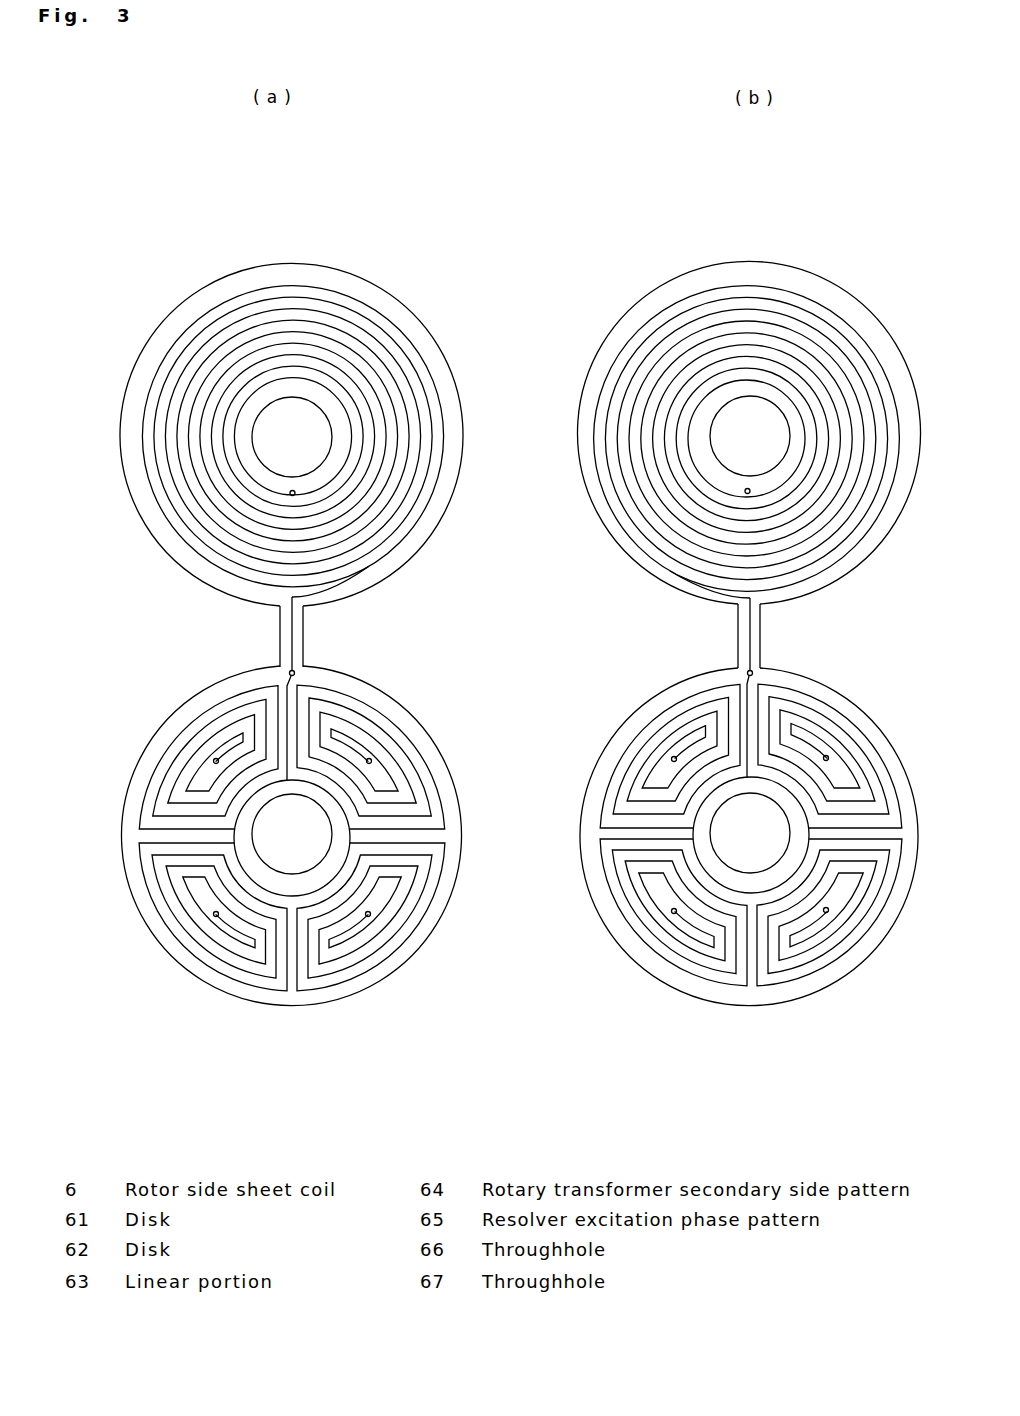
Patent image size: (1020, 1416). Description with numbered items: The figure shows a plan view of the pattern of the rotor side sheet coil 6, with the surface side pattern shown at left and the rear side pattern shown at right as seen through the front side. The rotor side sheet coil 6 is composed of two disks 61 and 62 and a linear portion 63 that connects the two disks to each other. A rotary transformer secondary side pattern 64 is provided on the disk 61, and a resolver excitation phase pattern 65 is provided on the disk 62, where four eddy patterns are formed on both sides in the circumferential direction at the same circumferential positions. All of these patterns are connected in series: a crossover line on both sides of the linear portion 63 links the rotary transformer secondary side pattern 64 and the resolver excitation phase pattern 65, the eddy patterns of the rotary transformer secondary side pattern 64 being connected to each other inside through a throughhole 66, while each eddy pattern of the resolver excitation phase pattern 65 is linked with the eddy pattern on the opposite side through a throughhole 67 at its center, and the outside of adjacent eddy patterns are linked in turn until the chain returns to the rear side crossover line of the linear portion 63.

The rotor side sheet coil 6 is at (299, 262).
The disk 61 is at (395, 300).
The disk 62 is at (424, 960).
The linear portion 63 is at (303, 640).
The rotary transformer secondary side pattern 64 is at (328, 283).
The resolver excitation phase pattern 65 is at (363, 977).
The throughhole 66 is at (295, 496).
The throughhole 67 is at (372, 910).